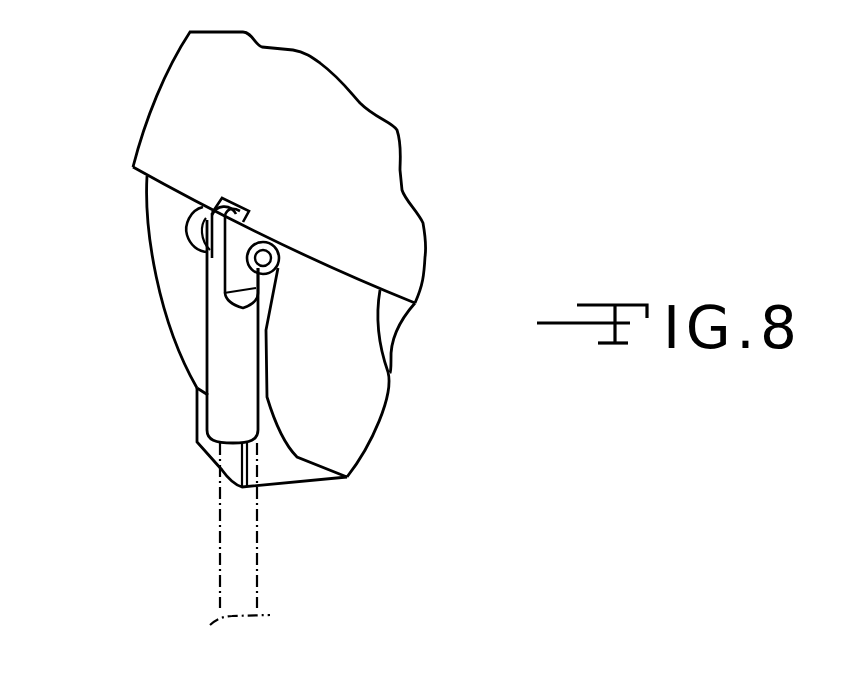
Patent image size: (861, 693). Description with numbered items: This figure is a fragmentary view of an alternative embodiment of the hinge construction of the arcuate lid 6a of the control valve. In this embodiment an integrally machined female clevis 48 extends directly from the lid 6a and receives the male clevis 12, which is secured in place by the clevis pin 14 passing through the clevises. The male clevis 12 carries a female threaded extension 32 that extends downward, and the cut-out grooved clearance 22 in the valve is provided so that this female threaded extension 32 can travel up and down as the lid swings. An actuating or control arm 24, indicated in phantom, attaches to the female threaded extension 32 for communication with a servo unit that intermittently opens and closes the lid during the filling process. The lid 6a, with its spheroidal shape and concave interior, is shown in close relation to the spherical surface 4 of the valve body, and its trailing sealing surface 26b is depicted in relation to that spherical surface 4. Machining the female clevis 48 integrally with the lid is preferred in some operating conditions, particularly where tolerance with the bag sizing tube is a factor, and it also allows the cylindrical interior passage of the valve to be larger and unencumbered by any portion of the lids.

The spherical surface 4 is at (346, 370).
The arcuate lid 6a is at (279, 146).
The male clevis 12 is at (207, 266).
The clevis pin 14 is at (279, 258).
The cut-out grooved clearance 22 is at (280, 465).
The control arm 24 is at (218, 542).
The trailing sealing surface 26b is at (390, 373).
The female threaded extension 32 is at (217, 357).
The integrally machined female clevis 48 is at (190, 227).